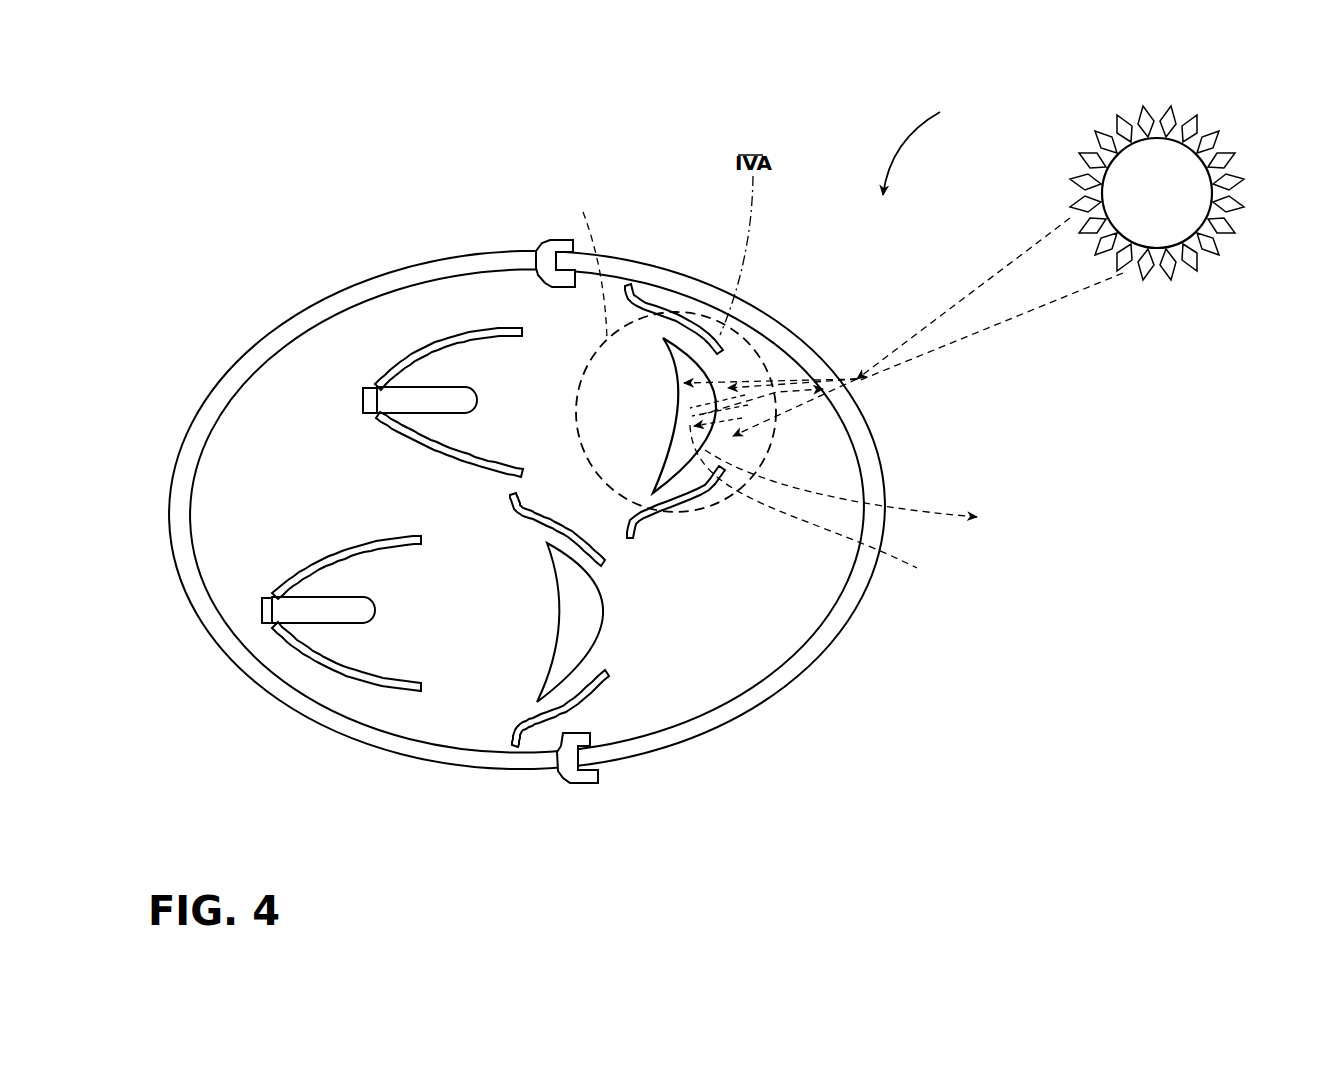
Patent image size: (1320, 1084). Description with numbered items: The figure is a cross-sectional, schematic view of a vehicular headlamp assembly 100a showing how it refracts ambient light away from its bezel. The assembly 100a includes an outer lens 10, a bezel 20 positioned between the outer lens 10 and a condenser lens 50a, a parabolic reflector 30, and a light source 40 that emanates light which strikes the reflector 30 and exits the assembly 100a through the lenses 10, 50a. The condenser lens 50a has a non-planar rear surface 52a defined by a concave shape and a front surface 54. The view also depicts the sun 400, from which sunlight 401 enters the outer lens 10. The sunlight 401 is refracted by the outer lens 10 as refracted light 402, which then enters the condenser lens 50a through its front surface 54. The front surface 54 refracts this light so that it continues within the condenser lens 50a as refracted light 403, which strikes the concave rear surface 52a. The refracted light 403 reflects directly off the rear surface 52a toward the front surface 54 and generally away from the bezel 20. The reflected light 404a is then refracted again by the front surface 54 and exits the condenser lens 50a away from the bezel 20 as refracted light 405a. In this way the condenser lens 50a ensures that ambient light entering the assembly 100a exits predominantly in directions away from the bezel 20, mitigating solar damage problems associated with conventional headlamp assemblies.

The outer lens 10 is at (633, 265).
The bezel 20 is at (650, 300).
The parabolic reflector 30 is at (443, 342).
The light source 40 is at (408, 397).
The condenser lens 50a is at (684, 381).
The non-planar rear surface 52a is at (716, 392).
The front surface 54 is at (728, 440).
The vehicular headlamp assembly 100a is at (928, 141).
The sun 400 is at (1200, 253).
The sunlight 401 is at (988, 283).
The refracted light 402 is at (800, 382).
The refracted light 403 is at (582, 263).
The reflected light 404a is at (818, 511).
The refracted light 405a is at (825, 390).